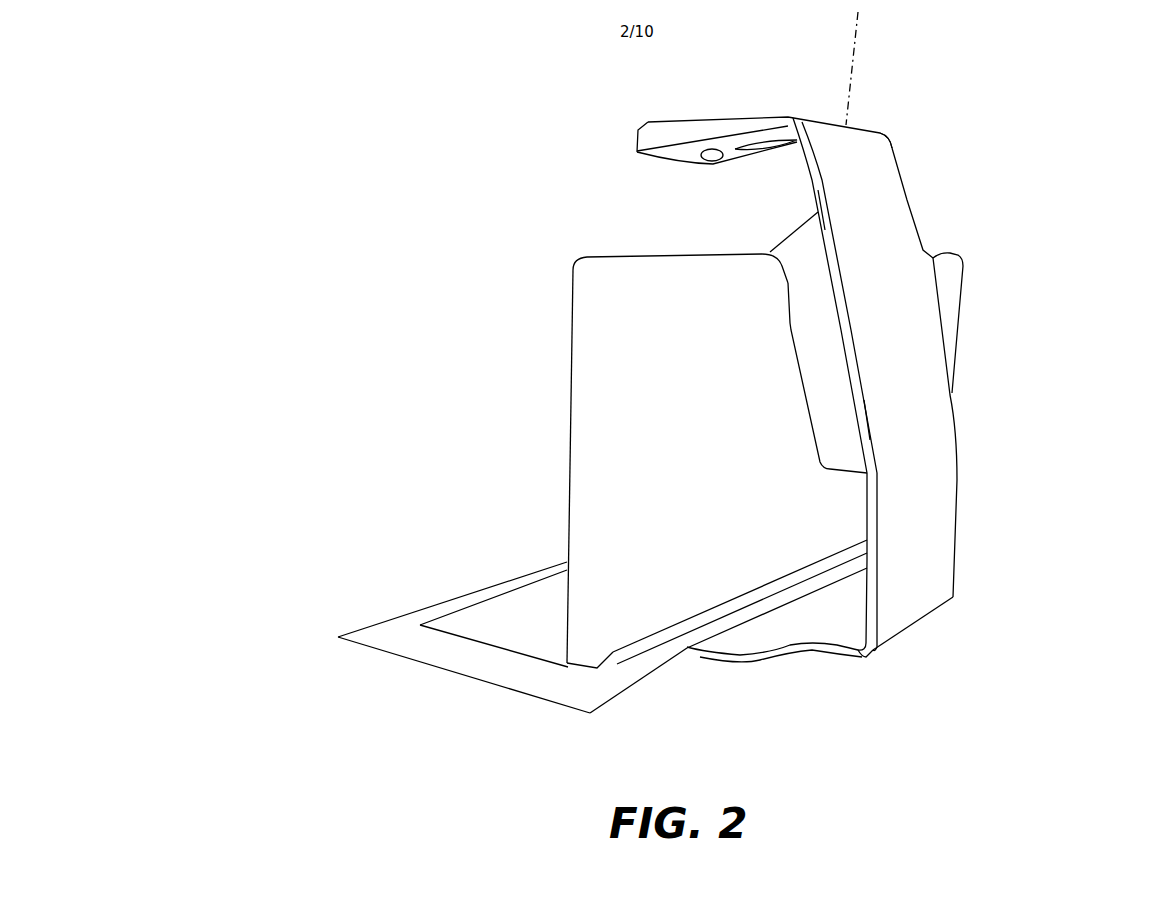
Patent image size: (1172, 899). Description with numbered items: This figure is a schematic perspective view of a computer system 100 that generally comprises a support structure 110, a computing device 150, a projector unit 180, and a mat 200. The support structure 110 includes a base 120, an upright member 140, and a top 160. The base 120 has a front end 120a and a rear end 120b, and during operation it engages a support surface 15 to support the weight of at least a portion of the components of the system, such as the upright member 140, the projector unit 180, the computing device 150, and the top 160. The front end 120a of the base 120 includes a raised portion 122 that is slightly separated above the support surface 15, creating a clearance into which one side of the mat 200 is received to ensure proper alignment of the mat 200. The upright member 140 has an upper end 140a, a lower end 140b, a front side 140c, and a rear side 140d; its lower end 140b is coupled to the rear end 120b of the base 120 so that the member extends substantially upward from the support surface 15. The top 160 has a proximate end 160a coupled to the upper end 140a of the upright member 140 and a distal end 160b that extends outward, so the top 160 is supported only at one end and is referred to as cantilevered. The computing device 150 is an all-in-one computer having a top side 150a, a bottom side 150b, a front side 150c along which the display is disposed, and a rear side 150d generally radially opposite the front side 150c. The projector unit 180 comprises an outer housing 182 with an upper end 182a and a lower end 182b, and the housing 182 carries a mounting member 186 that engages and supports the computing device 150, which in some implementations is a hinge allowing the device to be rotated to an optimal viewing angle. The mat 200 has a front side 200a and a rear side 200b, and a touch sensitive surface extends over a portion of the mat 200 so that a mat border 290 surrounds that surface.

The support surface 15 is at (310, 705).
The computer system 100 is at (352, 266).
The support structure 110 is at (1032, 256).
The base 120 is at (783, 656).
The front end 120a is at (776, 598).
The rear end 120b is at (871, 661).
The raised portion 122 is at (704, 649).
The upright member 140 is at (914, 527).
The upper end 140a is at (887, 134).
The lower end 140b is at (908, 626).
The front side 140c is at (803, 184).
The rear side 140d is at (908, 215).
The computing device 150 is at (570, 282).
The top side 150a is at (667, 252).
The bottom side 150b is at (612, 665).
The front side 150c is at (564, 424).
The rear side 150d is at (701, 383).
The top 160 is at (769, 99).
The proximate end 160a is at (887, 134).
The distal end 160b is at (640, 152).
The projector unit 180 is at (863, 376).
The outer housing 182 is at (843, 419).
The upper end 182a is at (822, 209).
The lower end 182b is at (835, 474).
The mounting member 186 is at (784, 290).
The mat 200 is at (392, 630).
The front side 200a is at (448, 600).
The rear side 200b is at (613, 703).
The mat border 290 is at (508, 675).